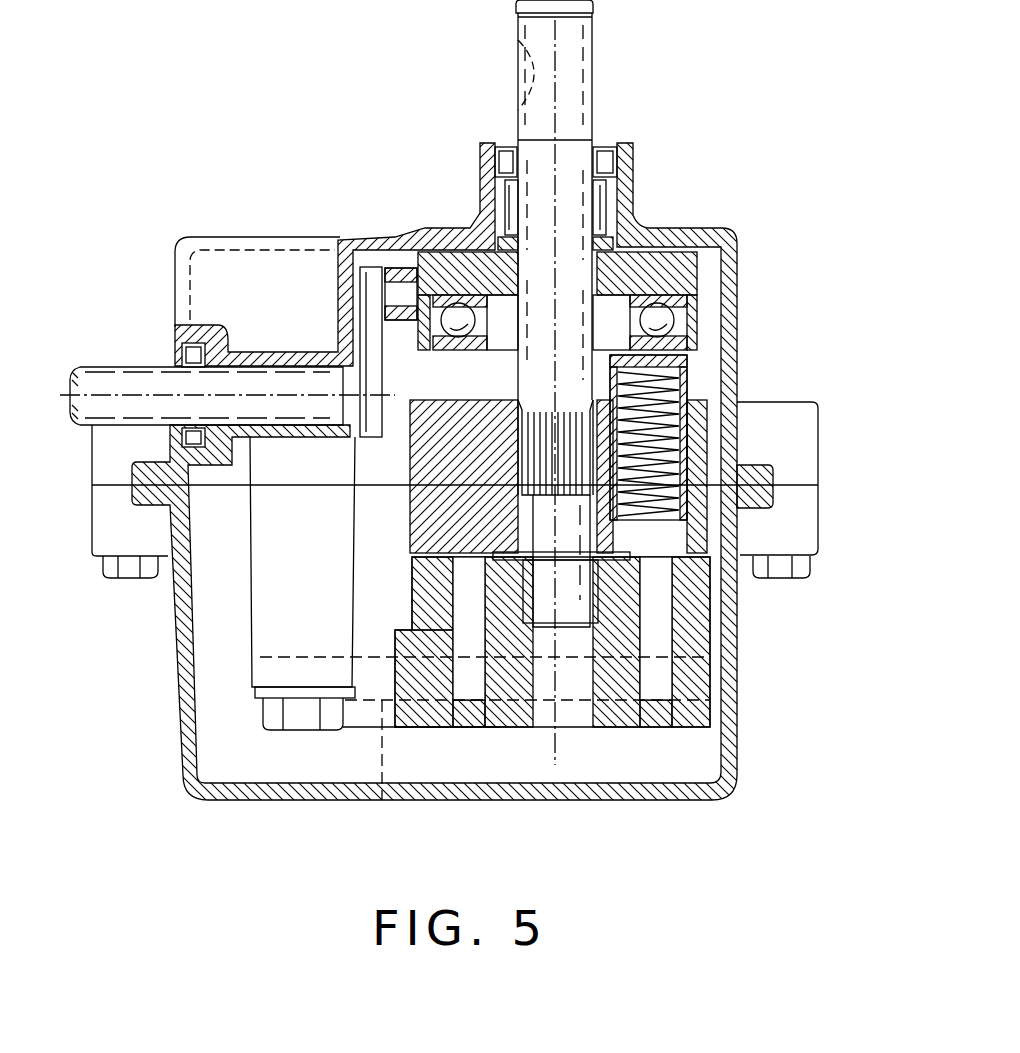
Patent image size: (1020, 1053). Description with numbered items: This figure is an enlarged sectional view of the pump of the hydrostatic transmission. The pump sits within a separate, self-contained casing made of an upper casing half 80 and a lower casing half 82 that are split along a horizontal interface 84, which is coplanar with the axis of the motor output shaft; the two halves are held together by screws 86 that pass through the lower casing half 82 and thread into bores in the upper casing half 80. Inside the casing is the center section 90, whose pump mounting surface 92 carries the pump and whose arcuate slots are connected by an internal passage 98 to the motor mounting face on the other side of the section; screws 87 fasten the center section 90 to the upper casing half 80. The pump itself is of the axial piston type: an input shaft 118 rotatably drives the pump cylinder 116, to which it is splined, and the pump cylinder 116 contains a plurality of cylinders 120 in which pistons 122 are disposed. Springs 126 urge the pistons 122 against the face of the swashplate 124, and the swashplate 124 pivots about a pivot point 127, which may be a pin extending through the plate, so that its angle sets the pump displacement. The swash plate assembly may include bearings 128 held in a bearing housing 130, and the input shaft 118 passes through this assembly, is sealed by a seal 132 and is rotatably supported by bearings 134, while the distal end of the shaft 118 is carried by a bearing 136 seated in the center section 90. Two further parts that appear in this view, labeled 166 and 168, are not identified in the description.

The upper casing half 80 is at (735, 288).
The lower casing half 82 is at (737, 687).
The horizontal interface 84 is at (820, 485).
The screws 86 is at (105, 573).
The screws 87 is at (275, 715).
The center section 90 is at (708, 635).
The pump mounting surface 92 is at (420, 528).
The internal passage 98 is at (382, 800).
The pump cylinder 116 is at (737, 398).
The input shaft 118 is at (575, 150).
The cylinders 120 is at (685, 510).
The pistons 122 is at (688, 370).
The swashplate 124 is at (445, 348).
The springs 126 is at (677, 430).
The pivot point 127 is at (712, 252).
The bearings 128 is at (663, 318).
The bearing housing 130 is at (673, 257).
The seal 132 is at (612, 163).
The bearings 134 is at (512, 200).
The bearing 136 is at (530, 597).
The input shaft 166 is at (140, 375).
The cover 168 is at (365, 320).